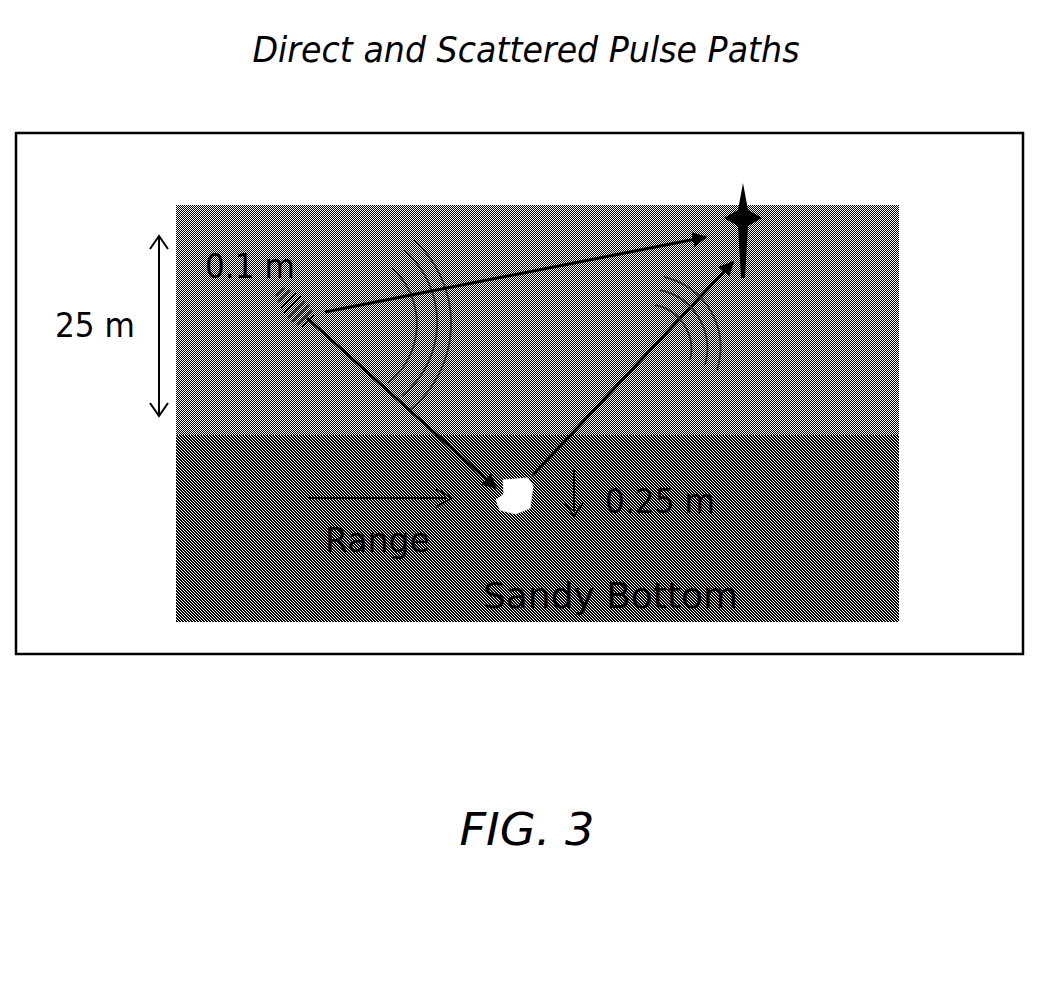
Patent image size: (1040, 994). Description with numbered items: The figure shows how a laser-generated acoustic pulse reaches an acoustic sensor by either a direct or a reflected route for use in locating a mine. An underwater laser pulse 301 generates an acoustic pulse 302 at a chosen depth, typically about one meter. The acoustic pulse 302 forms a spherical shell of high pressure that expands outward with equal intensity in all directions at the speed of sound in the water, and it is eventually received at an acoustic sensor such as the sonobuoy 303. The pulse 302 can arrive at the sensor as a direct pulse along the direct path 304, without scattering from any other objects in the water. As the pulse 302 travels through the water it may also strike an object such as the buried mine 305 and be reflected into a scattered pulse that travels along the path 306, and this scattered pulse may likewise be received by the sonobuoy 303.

The underwater laser pulse 301 is at (280, 318).
The acoustic pulse 302 is at (447, 318).
The sonobuoy 303 is at (750, 251).
The direct path 304 is at (563, 268).
The buried mine 305 is at (536, 504).
The scattered pulse path 306 is at (596, 407).